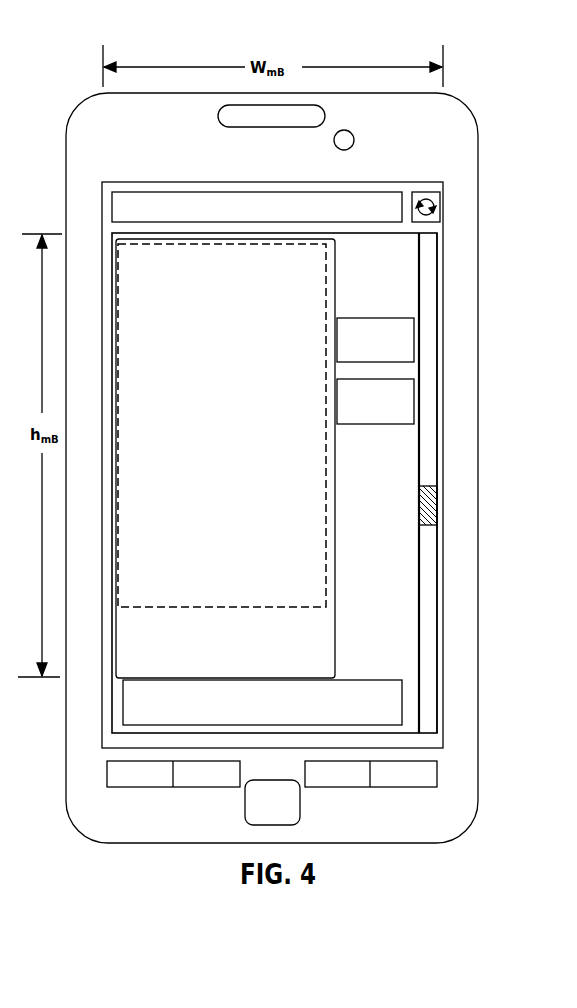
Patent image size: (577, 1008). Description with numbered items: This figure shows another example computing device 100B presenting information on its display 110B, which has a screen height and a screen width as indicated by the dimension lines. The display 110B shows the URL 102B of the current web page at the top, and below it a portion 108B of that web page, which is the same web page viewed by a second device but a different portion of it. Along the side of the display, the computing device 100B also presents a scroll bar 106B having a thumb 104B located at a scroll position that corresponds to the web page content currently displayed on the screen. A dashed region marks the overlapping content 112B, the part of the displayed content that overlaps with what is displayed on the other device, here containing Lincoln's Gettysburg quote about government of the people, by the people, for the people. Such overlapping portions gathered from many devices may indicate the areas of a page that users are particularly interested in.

The computing device 100B is at (462, 103).
The URL 102B is at (348, 192).
The thumb 104B is at (428, 508).
The scroll bar 106B is at (432, 360).
The portion of the web page 108B is at (389, 269).
The display 110B is at (442, 738).
The overlapping content 112B is at (328, 442).